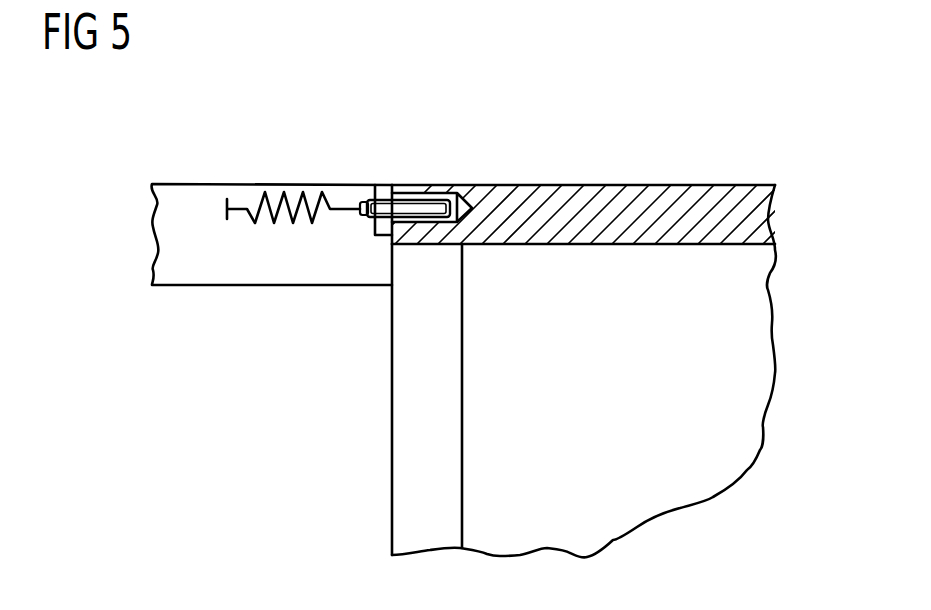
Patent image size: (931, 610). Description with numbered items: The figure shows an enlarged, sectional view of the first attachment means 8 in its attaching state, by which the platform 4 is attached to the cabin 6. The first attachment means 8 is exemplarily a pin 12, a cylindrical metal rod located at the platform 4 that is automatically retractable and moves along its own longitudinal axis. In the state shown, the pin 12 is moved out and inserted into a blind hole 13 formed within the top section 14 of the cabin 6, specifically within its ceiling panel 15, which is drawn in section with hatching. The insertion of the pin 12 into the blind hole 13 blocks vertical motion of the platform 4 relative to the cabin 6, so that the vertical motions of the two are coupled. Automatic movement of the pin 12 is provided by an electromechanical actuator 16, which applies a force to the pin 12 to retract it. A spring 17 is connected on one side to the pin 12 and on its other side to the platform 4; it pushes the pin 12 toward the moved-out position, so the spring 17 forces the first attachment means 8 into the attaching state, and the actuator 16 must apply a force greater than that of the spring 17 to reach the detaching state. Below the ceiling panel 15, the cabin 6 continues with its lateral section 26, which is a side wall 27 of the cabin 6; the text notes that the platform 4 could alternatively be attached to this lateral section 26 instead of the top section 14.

The platform 4 is at (210, 184).
The cabin 6 is at (758, 363).
The first attachment means 8 is at (349, 208).
The pin 12 is at (376, 184).
The blind hole 13 is at (440, 184).
The top section 14 is at (597, 156).
The ceiling panel 15 is at (718, 184).
The electromechanical actuator 16 is at (383, 230).
The spring 17 is at (283, 184).
The lateral section 26 is at (357, 399).
The side wall 27 is at (408, 491).